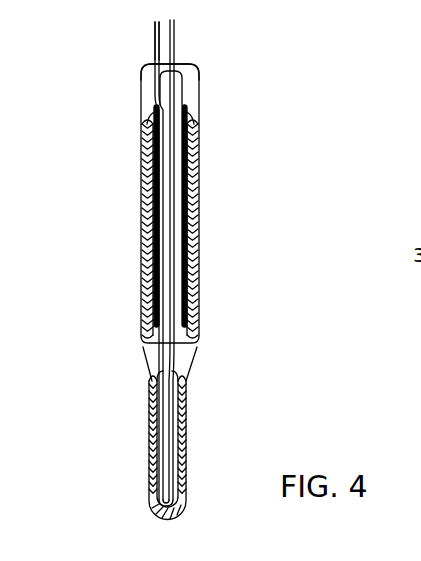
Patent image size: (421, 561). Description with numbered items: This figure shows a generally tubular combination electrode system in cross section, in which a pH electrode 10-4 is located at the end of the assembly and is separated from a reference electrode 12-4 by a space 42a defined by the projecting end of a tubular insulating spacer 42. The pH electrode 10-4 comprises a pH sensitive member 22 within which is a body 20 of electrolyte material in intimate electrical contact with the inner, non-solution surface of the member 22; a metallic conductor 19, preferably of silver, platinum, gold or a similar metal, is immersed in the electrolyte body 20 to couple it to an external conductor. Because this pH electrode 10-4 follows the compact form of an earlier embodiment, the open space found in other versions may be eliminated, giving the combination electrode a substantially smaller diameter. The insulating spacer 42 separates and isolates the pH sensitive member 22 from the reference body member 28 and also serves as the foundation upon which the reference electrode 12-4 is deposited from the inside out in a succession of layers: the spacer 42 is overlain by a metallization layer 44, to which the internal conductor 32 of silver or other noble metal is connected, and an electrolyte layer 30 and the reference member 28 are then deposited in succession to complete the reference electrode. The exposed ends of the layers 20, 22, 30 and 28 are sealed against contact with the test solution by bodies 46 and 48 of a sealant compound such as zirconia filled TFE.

The pH electrode 10-4 is at (122, 462).
The reference electrode 12-4 is at (127, 232).
The metallic conductor 19 is at (175, 40).
The body of electrolyte material 20 is at (183, 430).
The pH sensitive member 22 is at (185, 498).
The reference body member 28 is at (196, 301).
The electrolyte body 30 is at (192, 226).
The internal conductor 32 is at (155, 43).
The tubular insulating spacer 42 is at (182, 86).
The space 42a is at (158, 371).
The metallization layer 44 is at (186, 115).
The body of sealant compound 46 is at (142, 78).
The body of sealant compound 48 is at (151, 372).